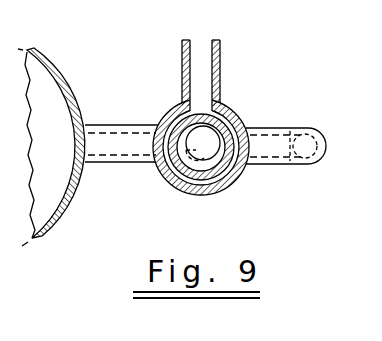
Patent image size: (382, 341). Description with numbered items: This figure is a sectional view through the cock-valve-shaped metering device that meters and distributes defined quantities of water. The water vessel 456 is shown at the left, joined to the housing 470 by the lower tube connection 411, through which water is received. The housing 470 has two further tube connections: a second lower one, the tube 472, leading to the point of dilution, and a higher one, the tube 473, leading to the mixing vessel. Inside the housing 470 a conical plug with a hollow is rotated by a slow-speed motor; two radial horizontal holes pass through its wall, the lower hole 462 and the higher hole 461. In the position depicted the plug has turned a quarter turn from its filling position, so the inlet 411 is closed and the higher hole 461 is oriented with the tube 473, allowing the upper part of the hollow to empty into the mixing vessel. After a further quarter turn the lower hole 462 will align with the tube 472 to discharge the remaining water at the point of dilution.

The water vessel 456 is at (57, 71).
The tube connection to the water vessel 411 is at (120, 138).
The higher hole 461 is at (158, 143).
The lower hole 462 is at (201, 186).
The housing 470 is at (238, 120).
The tube connection to the point of dilution 472 is at (290, 134).
The tube connection to the mixing vessel 473 is at (218, 54).